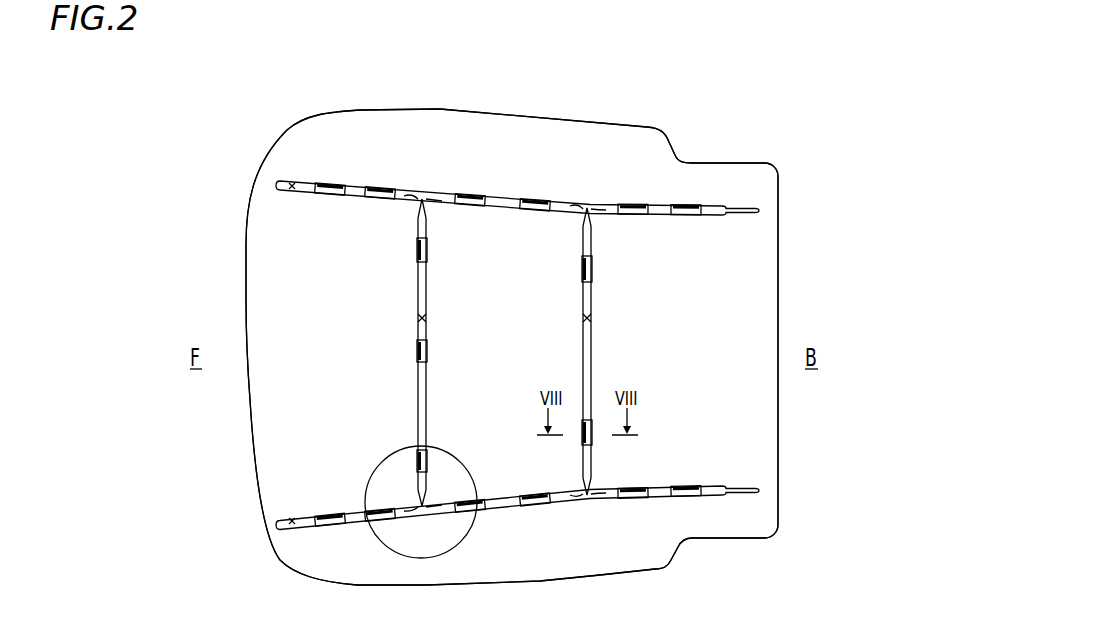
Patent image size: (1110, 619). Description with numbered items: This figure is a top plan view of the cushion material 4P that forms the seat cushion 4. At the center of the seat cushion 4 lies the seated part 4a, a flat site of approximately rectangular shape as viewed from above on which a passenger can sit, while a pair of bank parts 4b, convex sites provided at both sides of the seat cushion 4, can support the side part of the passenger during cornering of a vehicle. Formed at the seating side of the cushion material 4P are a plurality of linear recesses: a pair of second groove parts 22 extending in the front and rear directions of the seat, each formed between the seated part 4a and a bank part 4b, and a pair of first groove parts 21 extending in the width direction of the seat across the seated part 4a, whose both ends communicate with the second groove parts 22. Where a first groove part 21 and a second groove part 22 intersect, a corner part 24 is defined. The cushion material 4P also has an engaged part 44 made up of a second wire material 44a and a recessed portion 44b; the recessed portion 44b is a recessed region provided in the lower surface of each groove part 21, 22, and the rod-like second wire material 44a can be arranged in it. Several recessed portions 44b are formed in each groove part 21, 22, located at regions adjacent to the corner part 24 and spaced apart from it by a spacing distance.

The cushion material 4P is at (686, 140).
The seat cushion 4 is at (512, 347).
The seated part 4a is at (510, 366).
The bank part 4b is at (517, 163).
The first groove part 21 is at (419, 318).
The second groove part 22 is at (293, 194).
The corner part 24 is at (408, 193).
The engaged part 44 is at (545, 354).
The second wire material 44a is at (317, 195).
The recessed portion 44b is at (327, 196).